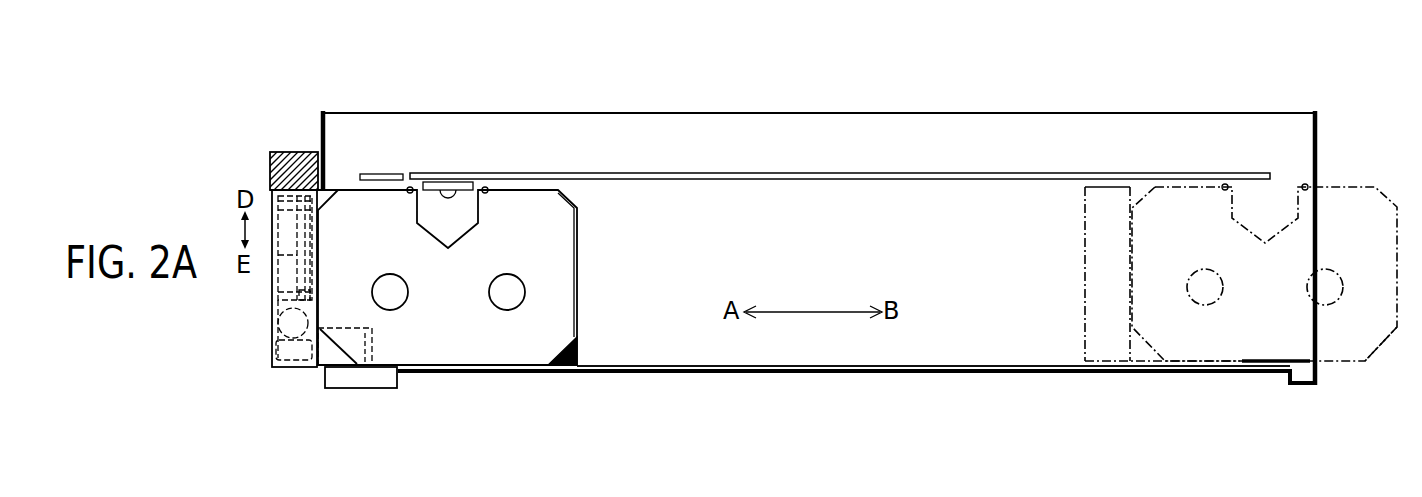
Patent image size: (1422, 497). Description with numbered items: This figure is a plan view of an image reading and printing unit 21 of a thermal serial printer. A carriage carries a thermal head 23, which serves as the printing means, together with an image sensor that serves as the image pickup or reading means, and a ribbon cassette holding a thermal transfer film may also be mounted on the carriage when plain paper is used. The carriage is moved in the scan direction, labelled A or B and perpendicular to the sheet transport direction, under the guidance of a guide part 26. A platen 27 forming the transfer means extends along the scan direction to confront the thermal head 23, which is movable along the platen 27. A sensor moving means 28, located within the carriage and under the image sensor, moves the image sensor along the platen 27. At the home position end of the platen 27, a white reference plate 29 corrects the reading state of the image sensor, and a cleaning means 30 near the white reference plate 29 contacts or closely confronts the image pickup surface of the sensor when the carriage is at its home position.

The image reading and printing unit 21 is at (607, 27).
The thermal head 23 is at (452, 184).
The guide part 26 is at (888, 373).
The platen 27 is at (838, 176).
The sensor moving means 28 is at (376, 352).
The white reference plate 29 is at (378, 172).
The cleaning means 30 is at (283, 152).